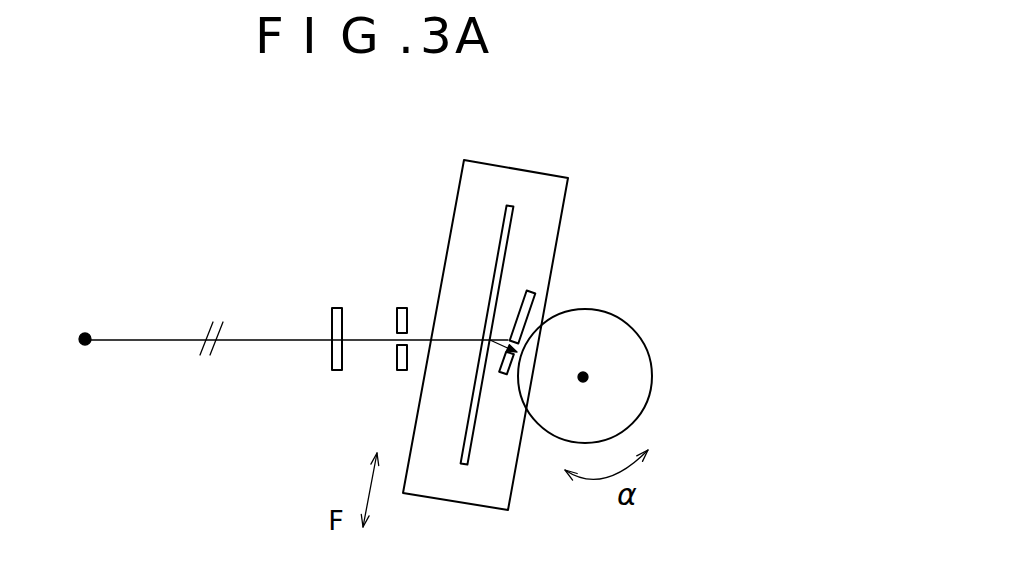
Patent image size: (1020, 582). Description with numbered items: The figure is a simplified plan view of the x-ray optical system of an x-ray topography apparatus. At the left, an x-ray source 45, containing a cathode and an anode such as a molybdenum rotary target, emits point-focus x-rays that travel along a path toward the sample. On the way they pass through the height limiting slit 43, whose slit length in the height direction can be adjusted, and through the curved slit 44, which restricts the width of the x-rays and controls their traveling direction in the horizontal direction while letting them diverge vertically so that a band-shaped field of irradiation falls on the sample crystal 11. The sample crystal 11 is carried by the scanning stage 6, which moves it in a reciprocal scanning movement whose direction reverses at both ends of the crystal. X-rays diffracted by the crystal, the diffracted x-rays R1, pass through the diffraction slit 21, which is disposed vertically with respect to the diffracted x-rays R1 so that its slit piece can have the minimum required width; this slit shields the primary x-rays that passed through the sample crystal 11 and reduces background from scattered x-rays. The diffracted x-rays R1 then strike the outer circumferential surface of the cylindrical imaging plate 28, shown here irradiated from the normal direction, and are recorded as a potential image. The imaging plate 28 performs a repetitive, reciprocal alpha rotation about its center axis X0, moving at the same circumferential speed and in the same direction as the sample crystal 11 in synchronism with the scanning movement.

The scanning stage 6 is at (505, 166).
The sample crystal 11 is at (498, 242).
The diffraction slit 21 is at (533, 292).
The imaging plate 28 is at (638, 327).
The height limiting slit 43 is at (338, 308).
The curved slit 44 is at (402, 308).
The x-ray source 45 is at (85, 333).
The diffracted x-rays R1 is at (493, 344).
The center axis X0 is at (605, 380).